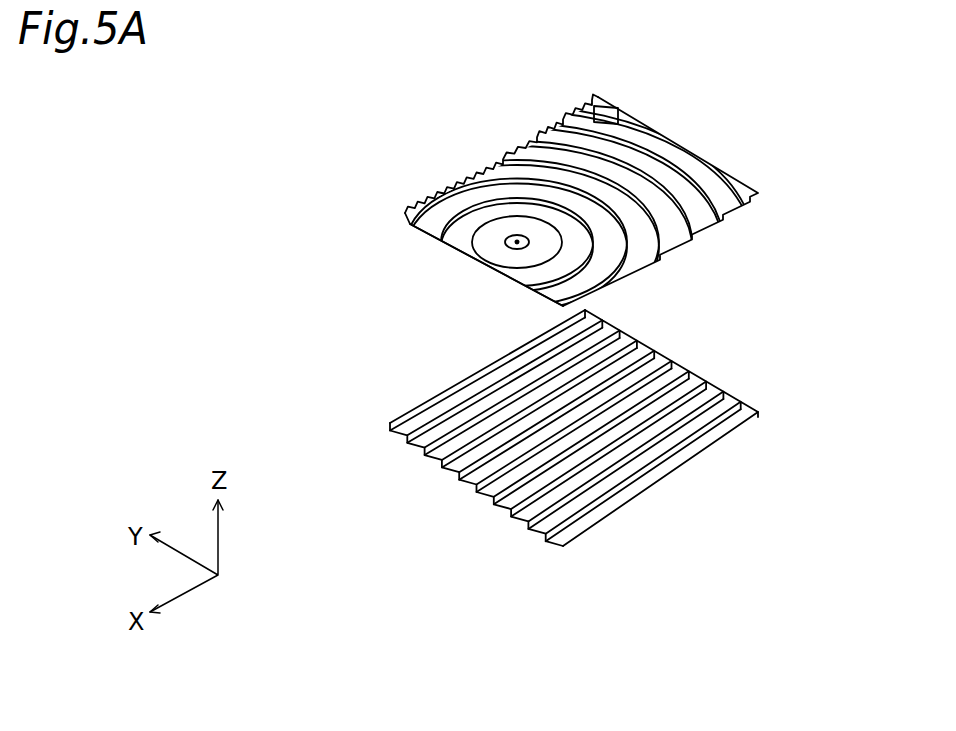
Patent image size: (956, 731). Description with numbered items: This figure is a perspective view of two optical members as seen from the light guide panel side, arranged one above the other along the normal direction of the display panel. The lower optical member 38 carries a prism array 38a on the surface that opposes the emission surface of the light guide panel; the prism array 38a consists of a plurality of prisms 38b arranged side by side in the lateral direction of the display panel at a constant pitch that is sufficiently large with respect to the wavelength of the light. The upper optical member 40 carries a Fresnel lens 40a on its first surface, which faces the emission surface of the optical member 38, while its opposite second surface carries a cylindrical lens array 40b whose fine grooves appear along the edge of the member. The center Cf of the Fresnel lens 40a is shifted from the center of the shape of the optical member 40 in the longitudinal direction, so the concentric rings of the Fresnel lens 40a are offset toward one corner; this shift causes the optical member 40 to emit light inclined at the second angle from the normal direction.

The optical member 40 is at (519, 215).
The Fresnel lens 40a is at (445, 252).
The cylindrical lens array 40b is at (532, 112).
The center of the Fresnel lens Cf is at (517, 245).
The optical member 38 is at (565, 446).
The prism array 38a is at (488, 507).
The prisms 38b is at (440, 465).